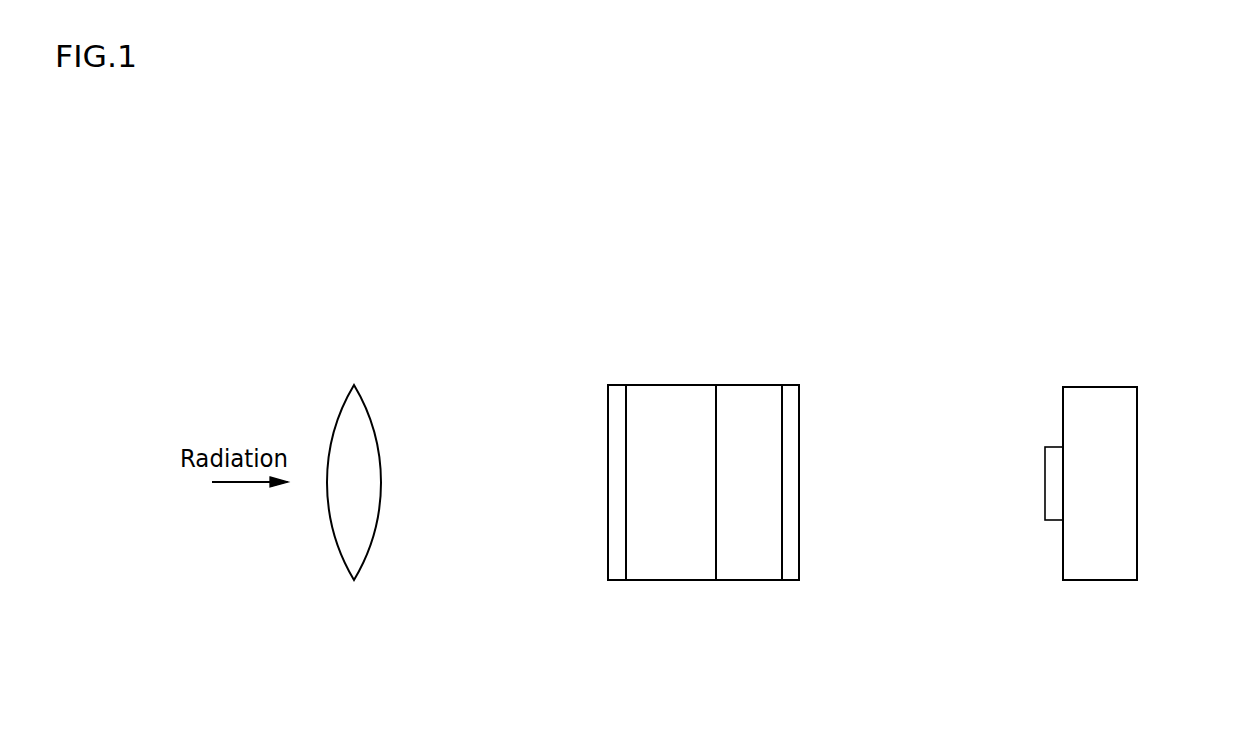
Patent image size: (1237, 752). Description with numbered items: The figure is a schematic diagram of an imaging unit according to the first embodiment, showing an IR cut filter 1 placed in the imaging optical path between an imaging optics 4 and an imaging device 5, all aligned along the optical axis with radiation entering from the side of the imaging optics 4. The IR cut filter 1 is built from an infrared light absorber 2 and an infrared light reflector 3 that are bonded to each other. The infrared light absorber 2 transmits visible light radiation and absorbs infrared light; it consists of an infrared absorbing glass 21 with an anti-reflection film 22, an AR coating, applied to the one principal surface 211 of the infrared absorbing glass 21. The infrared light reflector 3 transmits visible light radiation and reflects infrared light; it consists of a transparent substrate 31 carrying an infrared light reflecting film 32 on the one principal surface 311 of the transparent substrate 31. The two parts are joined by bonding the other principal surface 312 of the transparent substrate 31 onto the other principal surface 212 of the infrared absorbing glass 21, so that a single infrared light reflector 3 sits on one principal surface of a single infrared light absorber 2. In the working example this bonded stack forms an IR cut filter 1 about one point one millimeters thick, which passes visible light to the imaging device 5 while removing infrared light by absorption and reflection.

The IR cut filter 1 is at (798, 665).
The infrared light absorber 2 is at (717, 598).
The infrared light reflector 3 is at (798, 598).
The imaging optics 4 is at (365, 427).
The imaging device 5 is at (1125, 427).
The infrared absorbing glass 21 is at (658, 402).
The anti-reflection film 22 is at (613, 432).
The transparent substrate 31 is at (755, 402).
The infrared light reflecting film 32 is at (793, 432).
The one principal surface of the infrared absorbing glass 211 is at (626, 483).
The other principal surface of the infrared absorbing glass 212 is at (716, 412).
The one principal surface of the transparent substrate 311 is at (782, 483).
The other principal surface of the transparent substrate 312 is at (716, 412).